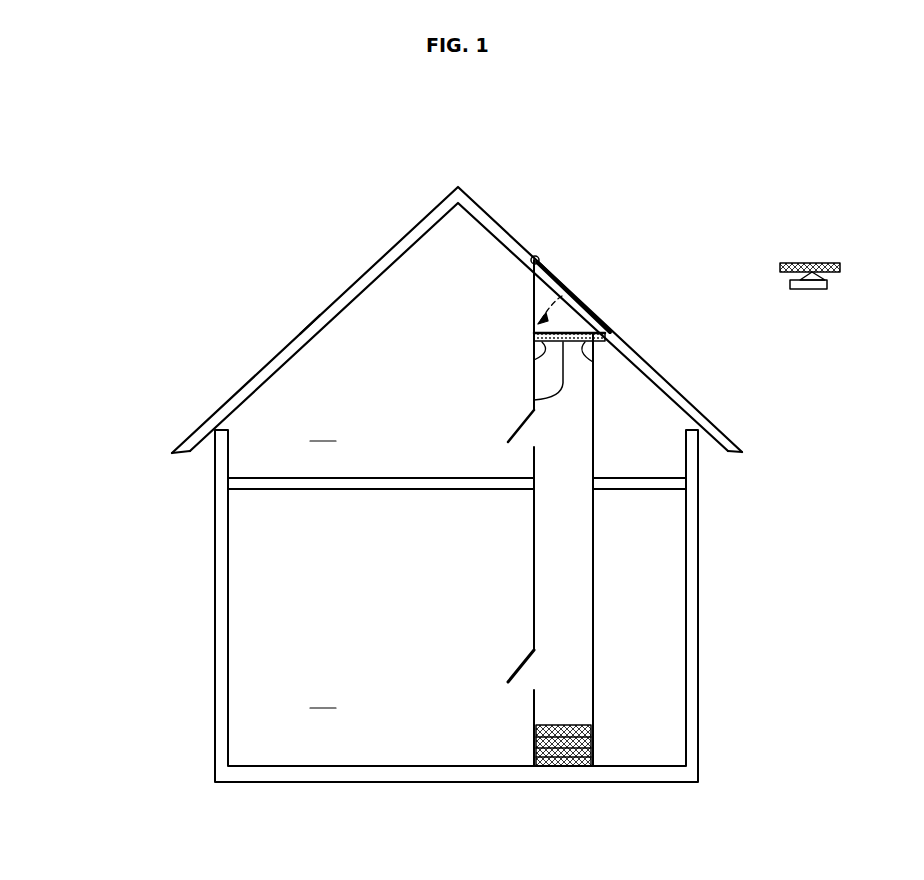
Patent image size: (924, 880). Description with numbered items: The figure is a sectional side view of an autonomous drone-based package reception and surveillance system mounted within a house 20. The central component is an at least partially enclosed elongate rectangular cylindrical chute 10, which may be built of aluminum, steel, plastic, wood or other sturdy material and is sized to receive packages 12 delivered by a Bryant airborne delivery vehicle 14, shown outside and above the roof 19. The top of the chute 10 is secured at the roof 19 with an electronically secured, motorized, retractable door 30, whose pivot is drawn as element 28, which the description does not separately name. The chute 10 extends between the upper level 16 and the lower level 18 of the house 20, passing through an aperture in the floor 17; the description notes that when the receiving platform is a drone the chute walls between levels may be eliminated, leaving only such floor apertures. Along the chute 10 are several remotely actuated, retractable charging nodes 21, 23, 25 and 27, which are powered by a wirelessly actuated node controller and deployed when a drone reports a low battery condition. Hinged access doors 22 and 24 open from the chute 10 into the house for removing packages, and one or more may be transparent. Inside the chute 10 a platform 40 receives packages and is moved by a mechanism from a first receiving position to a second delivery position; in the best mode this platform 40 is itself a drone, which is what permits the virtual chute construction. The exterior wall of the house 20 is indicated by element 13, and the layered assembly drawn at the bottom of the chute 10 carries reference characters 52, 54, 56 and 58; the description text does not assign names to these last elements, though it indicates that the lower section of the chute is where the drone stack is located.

The chute 10 is at (596, 536).
The packages 12 is at (818, 290).
The building 13 is at (215, 610).
The Bryant airborne delivery vehicle 14 is at (824, 264).
The upper level 16 is at (323, 430).
The floor 17 is at (330, 490).
The lower level 18 is at (323, 697).
The roof 19 is at (237, 392).
The house 20 is at (300, 326).
The retractable charging node 21 is at (546, 355).
The hinged access door 22 is at (522, 664).
The retractable charging node 23 is at (590, 362).
The hinged access door 24 is at (518, 432).
The retractable charging node 25 is at (540, 706).
The retractable charging node 27 is at (592, 700).
The hatch hinge 28 is at (540, 258).
The retractable door 30 is at (586, 309).
The platform 40 is at (534, 400).
The filter assembly 52 is at (585, 727).
The filter layer 54 is at (593, 743).
The filter layer 56 is at (536, 750).
The filter layer 58 is at (550, 760).